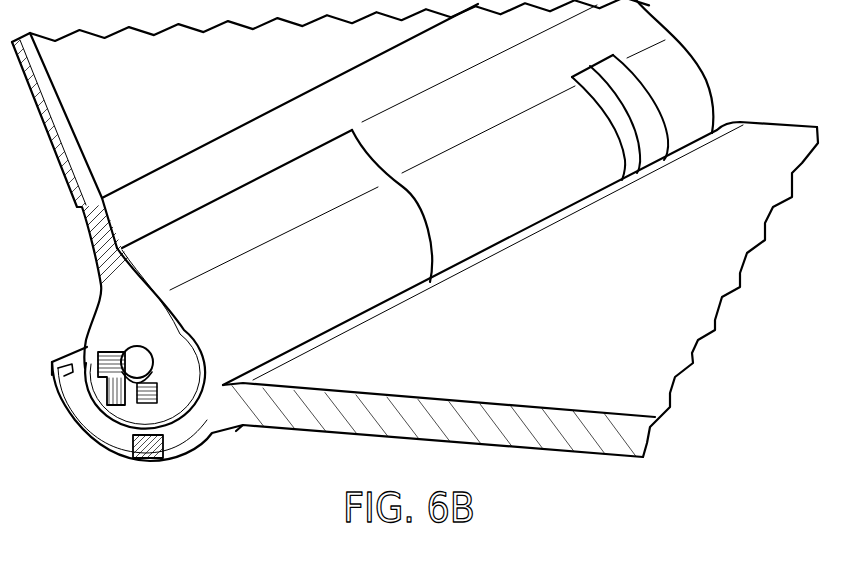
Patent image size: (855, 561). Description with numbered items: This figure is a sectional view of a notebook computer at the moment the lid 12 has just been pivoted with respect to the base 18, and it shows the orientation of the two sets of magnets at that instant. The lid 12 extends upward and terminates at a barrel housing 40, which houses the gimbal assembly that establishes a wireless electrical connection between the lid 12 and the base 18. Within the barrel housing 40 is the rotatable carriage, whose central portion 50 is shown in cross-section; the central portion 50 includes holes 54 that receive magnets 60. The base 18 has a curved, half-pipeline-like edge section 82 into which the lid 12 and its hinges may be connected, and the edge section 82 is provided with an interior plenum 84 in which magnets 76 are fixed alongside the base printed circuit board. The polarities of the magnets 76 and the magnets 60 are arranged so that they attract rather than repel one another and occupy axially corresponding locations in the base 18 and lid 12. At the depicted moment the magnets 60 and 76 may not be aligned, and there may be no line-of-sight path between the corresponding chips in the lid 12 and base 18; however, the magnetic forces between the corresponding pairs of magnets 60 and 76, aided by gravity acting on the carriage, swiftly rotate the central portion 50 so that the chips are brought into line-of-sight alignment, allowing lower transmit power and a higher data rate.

The lid 12 is at (88, 222).
The base 18 is at (672, 358).
The barrel housing 40 is at (523, 207).
The central portion 50 is at (178, 344).
The holes 54 is at (125, 358).
The magnets 60 is at (115, 392).
The magnets 76 is at (148, 447).
The edge section 82 is at (72, 407).
The interior plenum 84 is at (67, 375).